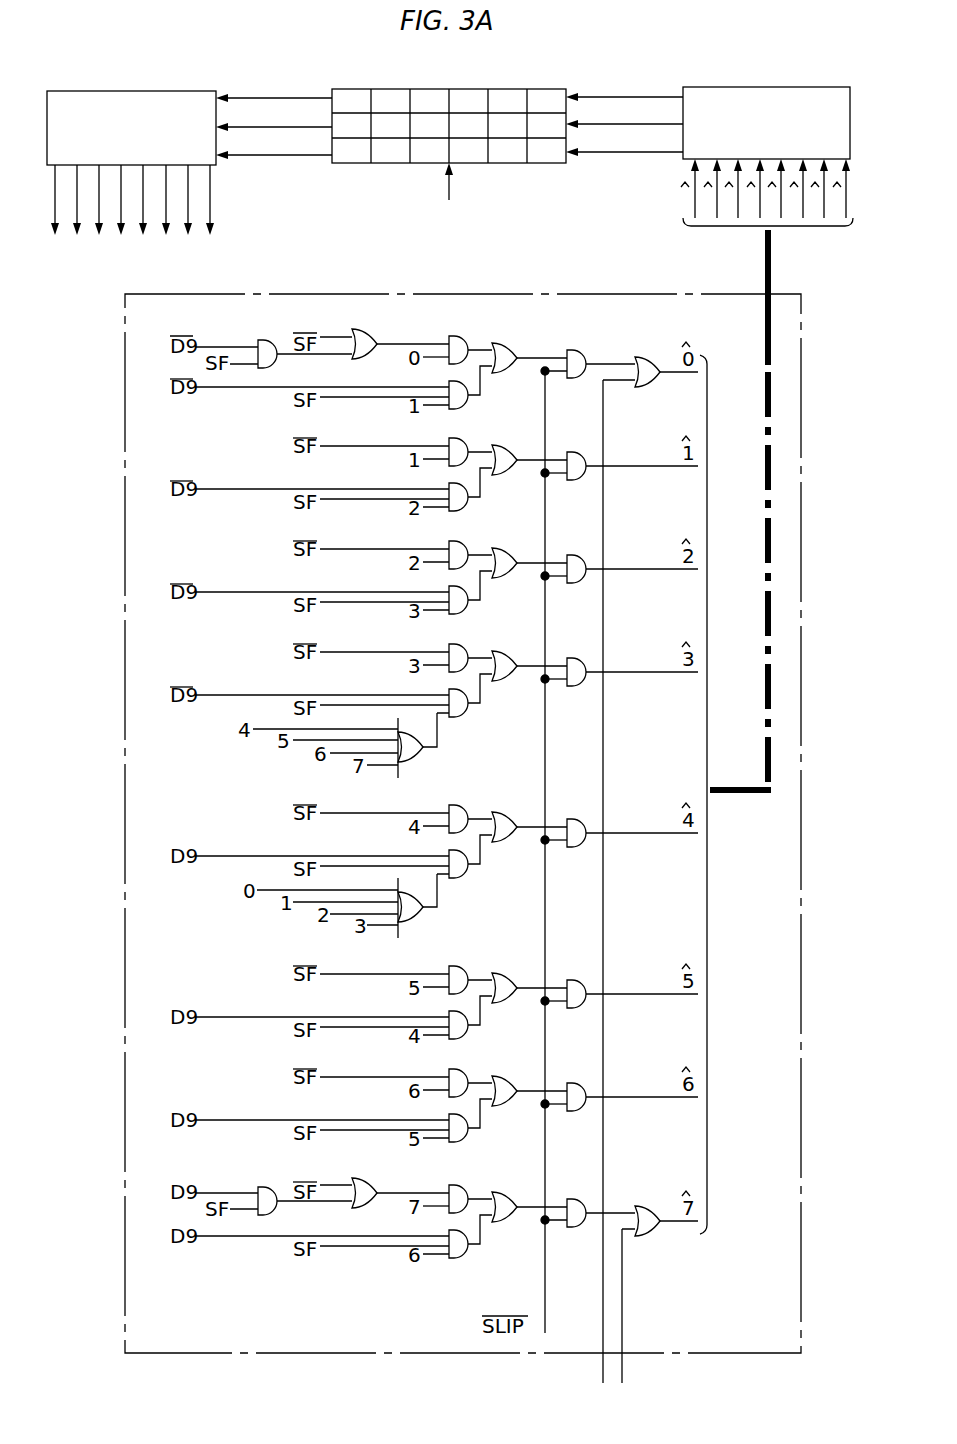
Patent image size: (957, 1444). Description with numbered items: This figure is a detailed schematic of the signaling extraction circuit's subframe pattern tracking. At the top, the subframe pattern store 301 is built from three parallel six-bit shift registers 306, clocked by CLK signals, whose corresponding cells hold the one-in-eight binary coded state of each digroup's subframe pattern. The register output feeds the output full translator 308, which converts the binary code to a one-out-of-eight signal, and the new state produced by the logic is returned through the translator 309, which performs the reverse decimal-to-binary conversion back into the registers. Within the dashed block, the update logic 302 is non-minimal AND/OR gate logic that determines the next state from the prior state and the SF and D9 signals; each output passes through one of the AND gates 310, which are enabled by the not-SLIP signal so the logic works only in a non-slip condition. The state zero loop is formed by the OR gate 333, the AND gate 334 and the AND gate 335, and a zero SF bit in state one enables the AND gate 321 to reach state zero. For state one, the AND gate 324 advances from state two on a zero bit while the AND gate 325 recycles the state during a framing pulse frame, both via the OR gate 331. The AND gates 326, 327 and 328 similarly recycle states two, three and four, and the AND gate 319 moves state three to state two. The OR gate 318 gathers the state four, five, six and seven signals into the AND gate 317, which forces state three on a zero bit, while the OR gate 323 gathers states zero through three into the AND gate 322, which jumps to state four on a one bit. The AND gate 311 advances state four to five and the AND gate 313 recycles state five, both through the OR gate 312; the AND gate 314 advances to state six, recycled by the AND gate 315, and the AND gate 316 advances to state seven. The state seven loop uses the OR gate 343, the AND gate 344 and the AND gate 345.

The subframe pattern store 301 is at (520, 163).
The update logic 302 is at (462, 294).
The shift registers 306 is at (332, 132).
The output full translator 308 is at (186, 91).
The translator 309 is at (703, 87).
The AND gates 310 is at (570, 351).
The AND gate 311 is at (463, 1037).
The OR gate 312 is at (513, 1003).
The AND gate 313 is at (460, 968).
The AND gate 314 is at (463, 1140).
The AND gate 315 is at (460, 1071).
The AND gate 316 is at (463, 1256).
The AND gate 317 is at (463, 715).
The OR gate 318 is at (418, 758).
The AND gate 319 is at (463, 612).
The AND gate 321 is at (463, 407).
The AND gate 322 is at (463, 876).
The OR gate 323 is at (418, 918).
The AND gate 324 is at (463, 509).
The AND gate 325 is at (460, 440).
The AND gate 326 is at (460, 543).
The AND gate 327 is at (460, 646).
The AND gate 328 is at (460, 807).
The OR gate 331 is at (513, 476).
The OR gate 333 is at (368, 331).
The AND gate 334 is at (460, 338).
The AND gate 335 is at (270, 369).
The OR gate 343 is at (368, 1180).
The AND gate 344 is at (460, 1187).
The AND gate 345 is at (270, 1215).